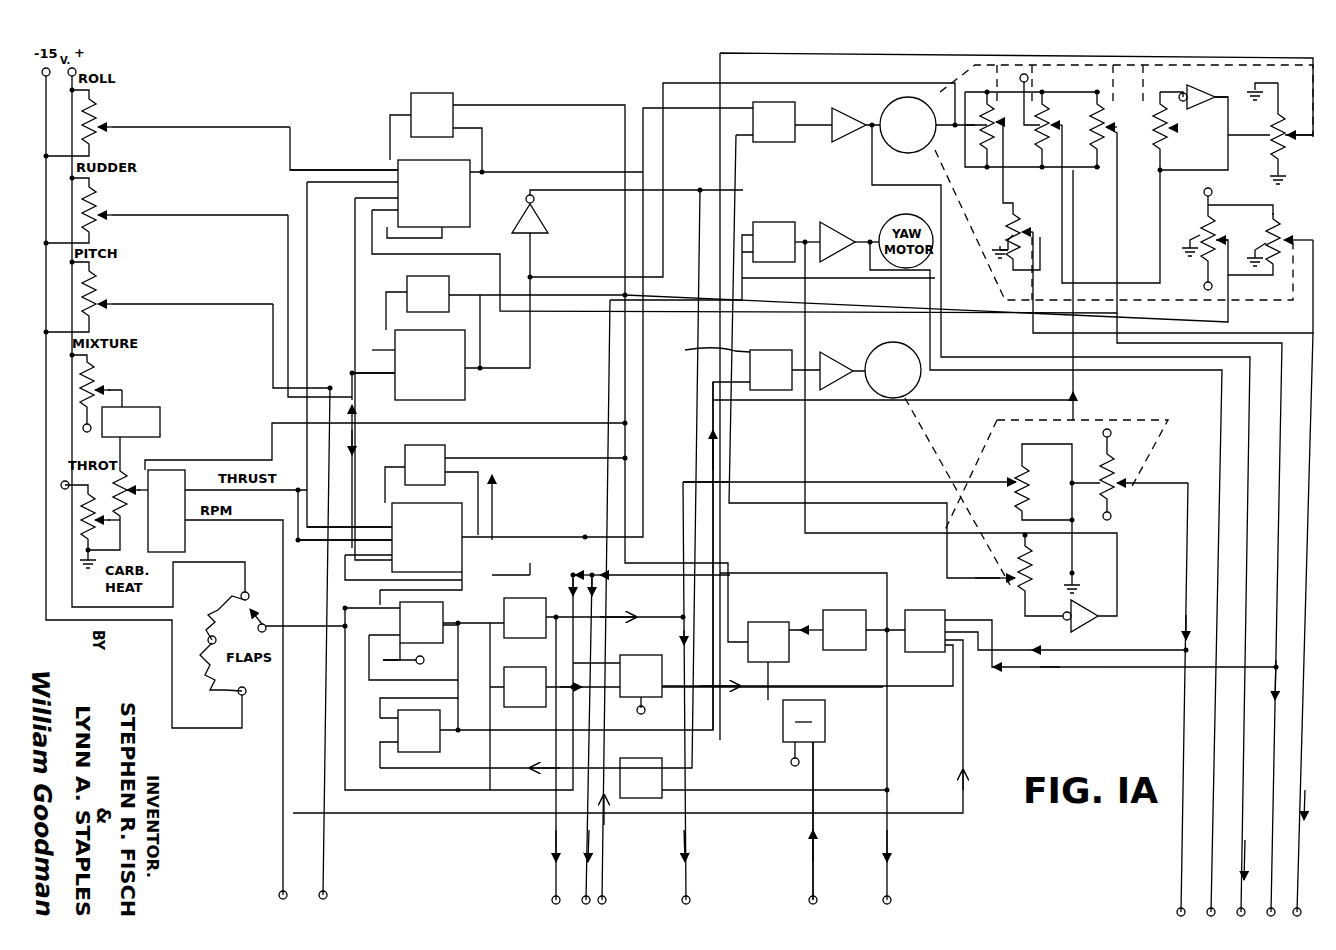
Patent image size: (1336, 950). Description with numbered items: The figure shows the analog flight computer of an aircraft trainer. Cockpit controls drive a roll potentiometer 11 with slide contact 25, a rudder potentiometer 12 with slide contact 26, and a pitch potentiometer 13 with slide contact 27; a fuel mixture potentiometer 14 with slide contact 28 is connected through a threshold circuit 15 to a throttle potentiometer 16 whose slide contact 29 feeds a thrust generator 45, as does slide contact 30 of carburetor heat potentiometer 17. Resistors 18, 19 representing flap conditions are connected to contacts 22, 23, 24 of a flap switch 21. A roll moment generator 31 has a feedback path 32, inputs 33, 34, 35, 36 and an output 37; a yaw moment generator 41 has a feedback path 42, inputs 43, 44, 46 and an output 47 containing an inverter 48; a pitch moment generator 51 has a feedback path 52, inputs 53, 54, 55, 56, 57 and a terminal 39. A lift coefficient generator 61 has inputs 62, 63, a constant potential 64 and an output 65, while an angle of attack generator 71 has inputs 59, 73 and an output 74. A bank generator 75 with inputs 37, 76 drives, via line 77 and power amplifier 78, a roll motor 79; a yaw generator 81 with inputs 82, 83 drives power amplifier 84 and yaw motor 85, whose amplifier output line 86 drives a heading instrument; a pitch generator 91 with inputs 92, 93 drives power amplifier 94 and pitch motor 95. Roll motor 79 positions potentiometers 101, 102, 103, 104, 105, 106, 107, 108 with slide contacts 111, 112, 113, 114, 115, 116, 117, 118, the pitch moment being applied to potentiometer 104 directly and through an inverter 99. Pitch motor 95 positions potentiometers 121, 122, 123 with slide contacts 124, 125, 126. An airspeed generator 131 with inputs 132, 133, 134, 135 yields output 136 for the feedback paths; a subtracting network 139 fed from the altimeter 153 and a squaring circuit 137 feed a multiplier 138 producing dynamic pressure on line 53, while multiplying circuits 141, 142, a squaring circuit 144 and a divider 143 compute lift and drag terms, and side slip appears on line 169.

The potentiometer 11 is at (92, 111).
The potentiometer 12 is at (91, 198).
The potentiometer 13 is at (91, 284).
The fuel mixture potentiometer 14 is at (88, 374).
The threshold circuit 15 is at (131, 408).
The potentiometer 16 is at (120, 470).
The potentiometer 17 is at (86, 508).
The resistor 18 is at (208, 594).
The resistor 19 is at (206, 686).
The flap switch 21 is at (258, 634).
The contact 22 is at (247, 593).
The contact 23 is at (197, 641).
The contact 24 is at (244, 694).
The slide contact 25 is at (102, 132).
The slide contact 26 is at (102, 218).
The slide contact 27 is at (102, 308).
The slide contact 28 is at (96, 392).
The slide contact 29 is at (127, 494).
The slide contact 30 is at (97, 524).
The roll moment generator 31 is at (404, 162).
The feedback path 32 is at (388, 136).
The input 33 is at (339, 171).
The input 34 is at (336, 184).
The input 35 is at (356, 204).
The input 36 is at (362, 239).
The output 37 is at (552, 172).
The roll moment generator input 39 is at (414, 235).
The yaw moment generator 41 is at (466, 384).
The feedback path 42 is at (400, 292).
The input 43 is at (383, 350).
The input 44 is at (382, 371).
The thrust generator 45 is at (185, 489).
The input 46 is at (388, 399).
The output 47 is at (566, 277).
The inverter 48 is at (534, 222).
The pitch moment generator 51 is at (466, 500).
The feedback path 52 is at (384, 487).
The input 53 is at (492, 457).
The input 54 is at (356, 527).
The input 55 is at (368, 541).
The input 56 is at (372, 562).
The input 57 is at (372, 590).
The input 59 is at (378, 711).
The lift coefficient generator 61 is at (398, 605).
The input 62 is at (378, 614).
The input 63 is at (360, 650).
The constant potential 64 is at (404, 664).
The output 65 is at (498, 615).
The angle of attack generator 71 is at (440, 748).
The input 73 is at (370, 762).
The output 74 is at (494, 725).
The bank generator 75 is at (772, 142).
The input 76 is at (736, 180).
The line 77 is at (828, 130).
The power amplifier 78 is at (854, 142).
The roll motor 79 is at (884, 110).
The yaw generator 81 is at (804, 232).
The input 82 is at (788, 210).
The input 83 is at (788, 281).
The power amplifier 84 is at (840, 262).
The yaw motor 85 is at (864, 234).
The line 86 is at (866, 268).
The pitch generator 91 is at (790, 350).
The input 92 is at (706, 350).
The input 93 is at (893, 295).
The power amplifier 94 is at (844, 356).
The pitch motor 95 is at (916, 376).
The inverter 99 is at (1203, 104).
The potentiometer 101 is at (1032, 130).
The potentiometer 102 is at (1046, 120).
The potentiometer 103 is at (1109, 130).
The potentiometer 104 is at (1190, 132).
The potentiometer 105 is at (1269, 133).
The potentiometer 106 is at (1004, 236).
The potentiometer 107 is at (1198, 232).
The potentiometer 108 is at (1290, 214).
The slide contact 111 is at (1011, 160).
The slide contact 112 is at (1105, 196).
The slide contact 113 is at (1271, 902).
The slide contact 114 is at (1181, 140).
The slide contact 115 is at (1293, 122).
The slide contact 116 is at (1152, 564).
The wiper 117 is at (1221, 237).
The wiper 118 is at (1302, 906).
The potentiometer 121 is at (1024, 510).
The potentiometer 122 is at (1112, 468).
The potentiometer 123 is at (1026, 560).
The slide contact 124 is at (1022, 500).
The slide contact 125 is at (1118, 486).
The slide contact 126 is at (992, 578).
The airspeed generator 131 is at (938, 612).
The input 132 is at (986, 614).
The input 133 is at (1034, 670).
The input 134 is at (964, 716).
The input 135 is at (941, 684).
The output 136 is at (536, 103).
The squaring circuit 137 is at (845, 606).
The multiplier 138 is at (770, 614).
The subtracting network 139 is at (824, 720).
The multiplying circuit 141 is at (538, 594).
The multiplying circuit 142 is at (655, 650).
The divider 143 is at (648, 752).
The squaring circuit 144 is at (540, 662).
The altimeter 153 is at (812, 894).
The line 169 is at (601, 894).